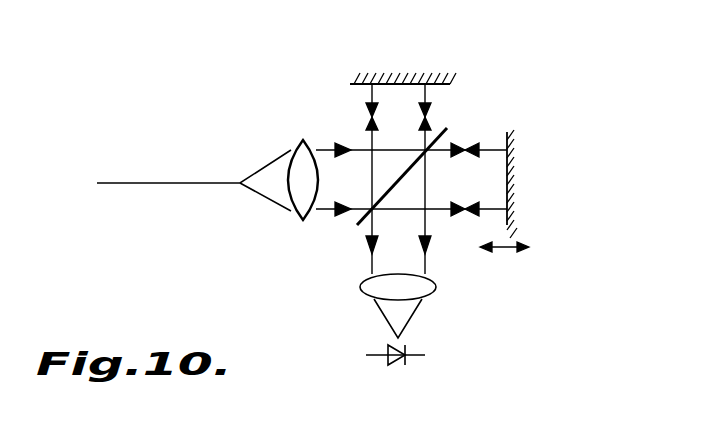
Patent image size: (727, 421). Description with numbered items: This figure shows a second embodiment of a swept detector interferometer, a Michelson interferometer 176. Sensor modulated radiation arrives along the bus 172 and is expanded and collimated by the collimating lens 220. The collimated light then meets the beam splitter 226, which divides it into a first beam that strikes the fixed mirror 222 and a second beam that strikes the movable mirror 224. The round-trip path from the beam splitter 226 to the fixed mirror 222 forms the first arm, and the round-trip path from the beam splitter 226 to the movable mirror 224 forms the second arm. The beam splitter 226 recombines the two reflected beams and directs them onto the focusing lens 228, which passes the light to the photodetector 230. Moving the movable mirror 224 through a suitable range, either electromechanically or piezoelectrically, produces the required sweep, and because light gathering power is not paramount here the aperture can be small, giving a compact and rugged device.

The bus 172 is at (190, 183).
The interferometer 176 is at (252, 120).
The collimating lens 220 is at (298, 142).
The fixed mirror 222 is at (357, 91).
The movable mirror 224 is at (505, 135).
The beam splitter 226 is at (438, 142).
The focusing lens 228 is at (360, 289).
The photodetector 230 is at (400, 360).